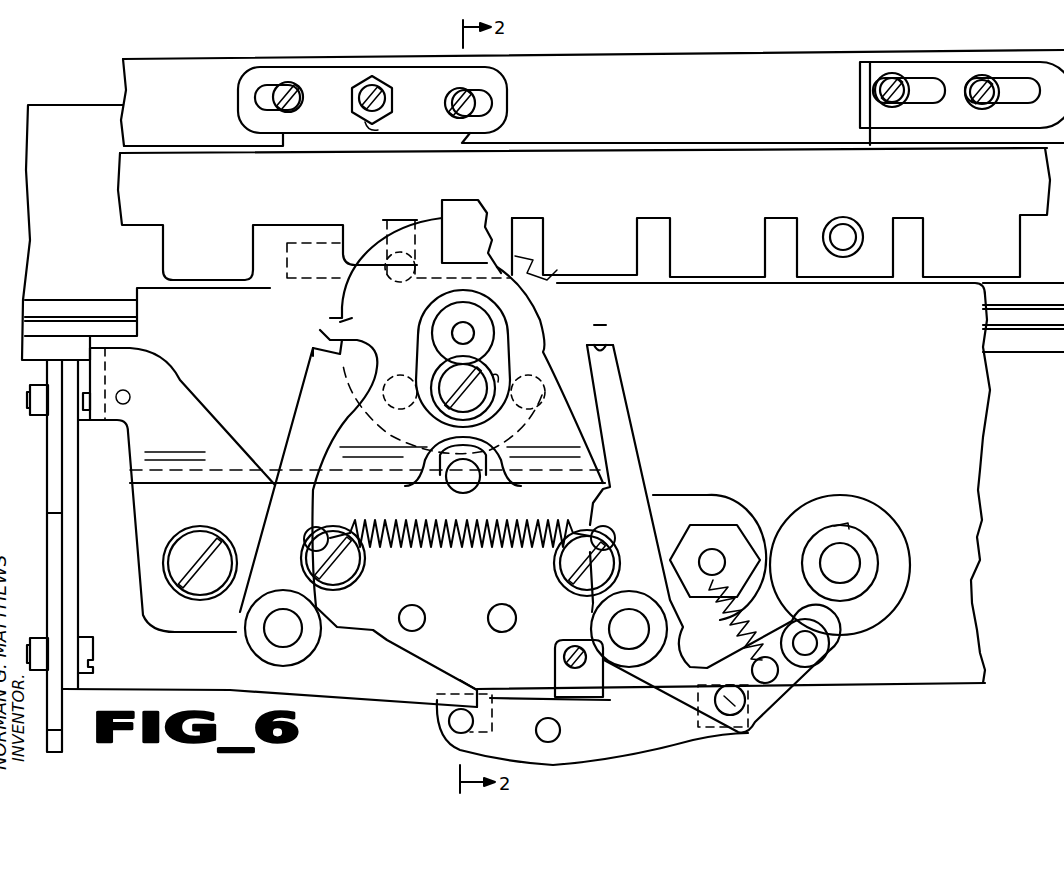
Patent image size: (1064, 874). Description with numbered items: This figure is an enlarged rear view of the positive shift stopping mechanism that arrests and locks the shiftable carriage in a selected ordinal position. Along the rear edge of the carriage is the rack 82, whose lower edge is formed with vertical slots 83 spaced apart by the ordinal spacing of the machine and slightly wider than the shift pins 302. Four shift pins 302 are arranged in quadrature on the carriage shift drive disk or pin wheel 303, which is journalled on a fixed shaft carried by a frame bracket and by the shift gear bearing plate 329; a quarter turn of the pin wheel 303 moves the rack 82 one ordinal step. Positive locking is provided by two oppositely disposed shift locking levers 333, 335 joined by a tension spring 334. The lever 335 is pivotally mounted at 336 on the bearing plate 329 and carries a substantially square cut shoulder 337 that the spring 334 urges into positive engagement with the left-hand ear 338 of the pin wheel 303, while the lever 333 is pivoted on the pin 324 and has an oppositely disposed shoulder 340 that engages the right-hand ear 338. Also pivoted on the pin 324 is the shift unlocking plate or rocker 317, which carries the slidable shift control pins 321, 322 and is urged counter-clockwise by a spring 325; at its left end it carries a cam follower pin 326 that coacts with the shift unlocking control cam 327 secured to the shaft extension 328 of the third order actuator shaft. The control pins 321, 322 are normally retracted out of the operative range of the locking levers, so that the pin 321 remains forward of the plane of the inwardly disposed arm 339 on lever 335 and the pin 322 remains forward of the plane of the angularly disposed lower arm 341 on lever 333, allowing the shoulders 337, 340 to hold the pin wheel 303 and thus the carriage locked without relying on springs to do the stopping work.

The rack 82 is at (675, 168).
The vertical slots 83 is at (768, 282).
The shift pins 302 is at (386, 239).
The carriage shift drive disk or pin wheel 303 is at (568, 386).
The shift unlocking plate or rocker 317 is at (610, 772).
The right shift control pin 321 is at (461, 722).
The left shift control pin 322 is at (746, 716).
The pin 324 is at (630, 627).
The spring 325 is at (687, 570).
The cam follower pin 326 is at (813, 652).
The shift unlocking control cam 327 is at (897, 572).
The shaft extension 328 is at (842, 564).
The shift gear bearing plate 329 is at (385, 444).
The shift locking lever 333 is at (587, 617).
The tension spring 334 is at (467, 550).
The shift locking lever 335 is at (243, 648).
The pivot 336 is at (284, 630).
The square cut shoulder 337 is at (313, 350).
The ear 338 is at (340, 322).
The inwardly disposed arm 339 is at (387, 680).
The shoulder 340 is at (614, 353).
The angularly disposed lower arm 341 is at (677, 703).